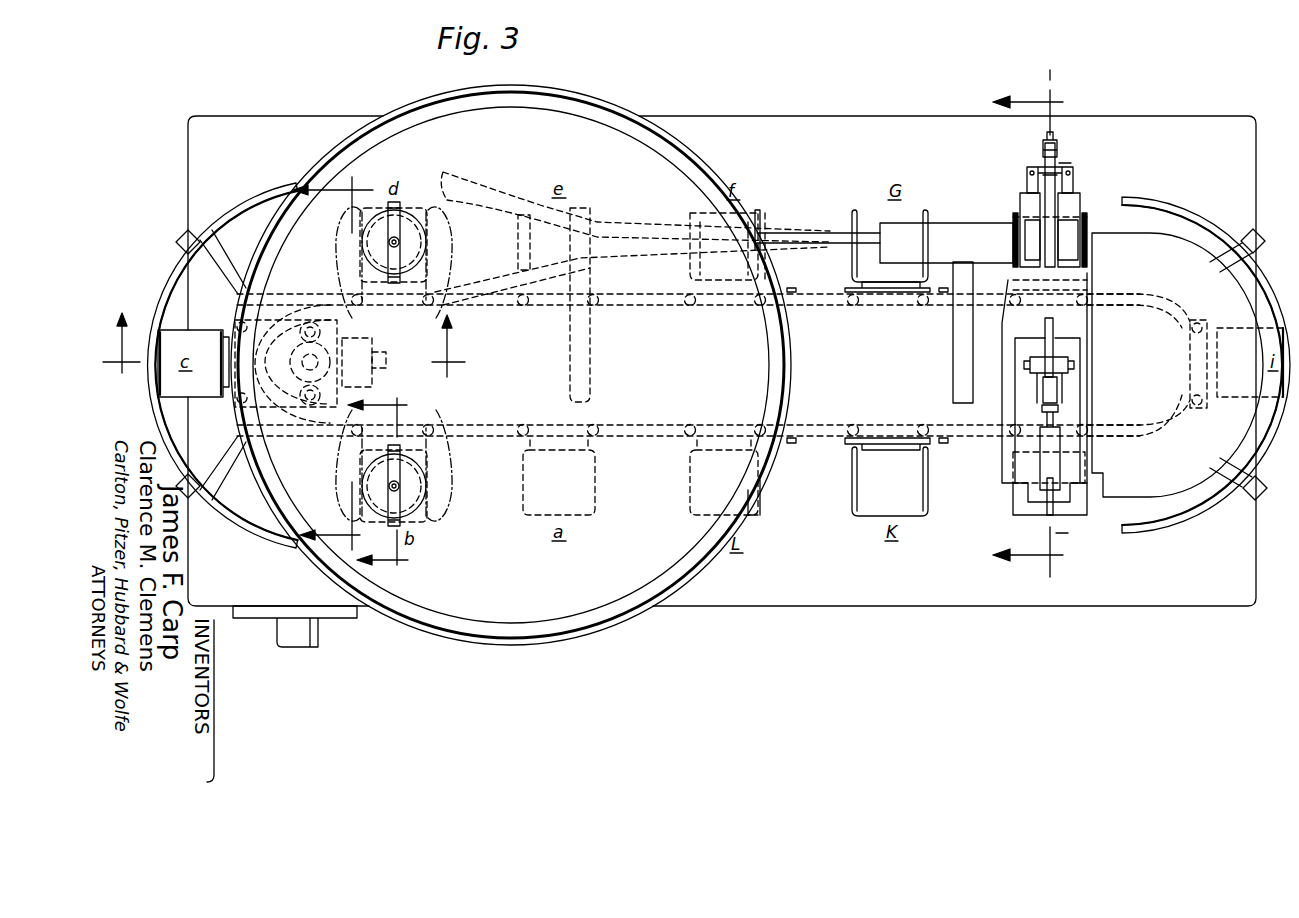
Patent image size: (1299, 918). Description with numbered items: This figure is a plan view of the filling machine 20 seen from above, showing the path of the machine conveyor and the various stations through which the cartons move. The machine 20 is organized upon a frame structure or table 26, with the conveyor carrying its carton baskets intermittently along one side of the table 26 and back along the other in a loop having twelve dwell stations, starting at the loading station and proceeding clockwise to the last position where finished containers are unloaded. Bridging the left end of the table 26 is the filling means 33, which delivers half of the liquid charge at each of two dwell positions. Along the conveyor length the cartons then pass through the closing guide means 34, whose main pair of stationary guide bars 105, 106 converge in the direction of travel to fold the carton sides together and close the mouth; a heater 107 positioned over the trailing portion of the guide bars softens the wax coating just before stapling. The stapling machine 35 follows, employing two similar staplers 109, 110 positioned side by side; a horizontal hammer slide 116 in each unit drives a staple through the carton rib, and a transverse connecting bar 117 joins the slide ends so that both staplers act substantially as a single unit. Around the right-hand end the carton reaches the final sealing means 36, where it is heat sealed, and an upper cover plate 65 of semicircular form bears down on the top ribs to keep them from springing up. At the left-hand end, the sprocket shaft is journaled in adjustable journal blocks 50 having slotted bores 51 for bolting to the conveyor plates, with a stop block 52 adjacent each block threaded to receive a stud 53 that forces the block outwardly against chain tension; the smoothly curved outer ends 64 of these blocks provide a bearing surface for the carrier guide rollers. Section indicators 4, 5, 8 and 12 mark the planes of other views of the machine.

The filling machine 20 is at (242, 106).
The frame structure or table 26 is at (1213, 128).
The filling means 33 is at (394, 364).
The closing guide means 34 is at (787, 214).
The stapling machine 35 is at (1058, 211).
The final sealing means 36 is at (1001, 507).
The journal blocks 50 is at (306, 398).
The slotted bores 51 is at (322, 404).
The stop block 52 is at (357, 347).
The stud 53 is at (384, 368).
The outer ends of the journal blocks 64 is at (292, 364).
The upper cover plate 65 is at (1152, 357).
The stationary guide bar 105 is at (503, 268).
The stationary guide bar 106 is at (500, 212).
The heater 107 is at (946, 232).
The stapler 109 is at (1022, 222).
The stapler 110 is at (1080, 207).
The hammer slide 116 is at (1025, 190).
The transverse connecting bar 117 is at (1036, 163).
The section line 4 is at (336, 363).
The section line 5 is at (378, 482).
The section line 8 is at (284, 357).
The section line 12 is at (1043, 323).